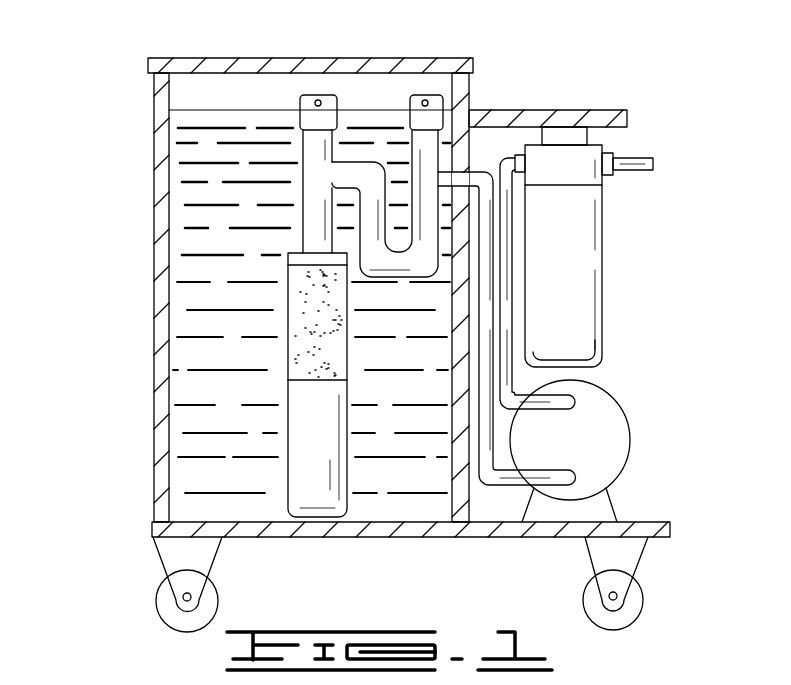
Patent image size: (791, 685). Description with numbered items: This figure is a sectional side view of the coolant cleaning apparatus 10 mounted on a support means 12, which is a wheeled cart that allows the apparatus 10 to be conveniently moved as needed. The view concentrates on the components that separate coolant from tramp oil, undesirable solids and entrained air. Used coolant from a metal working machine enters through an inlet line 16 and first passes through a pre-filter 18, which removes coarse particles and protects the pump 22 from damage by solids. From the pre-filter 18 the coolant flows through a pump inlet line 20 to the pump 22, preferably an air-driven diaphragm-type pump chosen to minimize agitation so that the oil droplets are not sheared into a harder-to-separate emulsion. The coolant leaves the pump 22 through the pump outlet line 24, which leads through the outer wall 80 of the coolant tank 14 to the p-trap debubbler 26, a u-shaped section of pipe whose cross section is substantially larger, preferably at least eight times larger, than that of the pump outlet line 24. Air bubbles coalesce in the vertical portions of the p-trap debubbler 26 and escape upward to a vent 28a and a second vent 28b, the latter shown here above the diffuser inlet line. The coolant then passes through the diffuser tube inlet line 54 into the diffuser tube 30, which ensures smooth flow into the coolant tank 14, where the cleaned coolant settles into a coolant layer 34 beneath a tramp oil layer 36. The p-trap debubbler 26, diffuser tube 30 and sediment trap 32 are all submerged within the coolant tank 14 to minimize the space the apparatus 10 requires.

The apparatus 10 is at (382, 92).
The support means 12 is at (646, 522).
The coolant tank 14 is at (349, 305).
The inlet line 16 is at (637, 160).
The pre-filter 18 is at (602, 287).
The pump inlet line 20 is at (512, 348).
The pump 22 is at (625, 415).
The pump outlet line 24 is at (496, 482).
The p-trap debubbler 26 is at (433, 227).
The vent 28a is at (437, 103).
The second vent 28b is at (308, 100).
The diffuser tube 30 is at (290, 352).
The sediment trap 32 is at (287, 493).
The coolant layer 34 is at (190, 242).
The tramp oil layer 36 is at (187, 120).
The diffuser tube inlet line 54 is at (305, 173).
The outer wall 80 is at (158, 268).